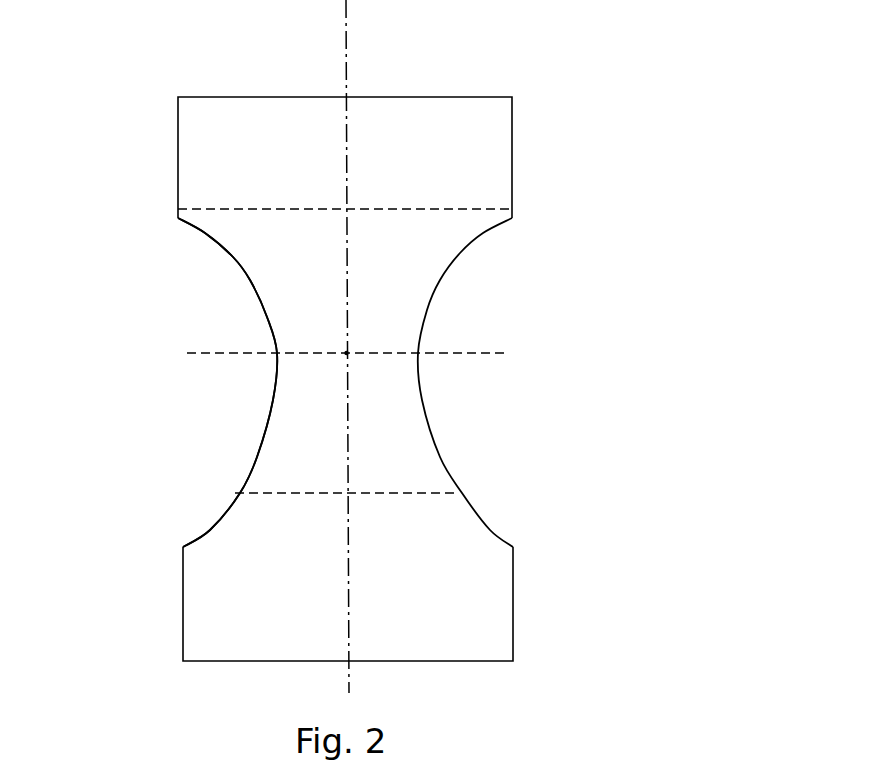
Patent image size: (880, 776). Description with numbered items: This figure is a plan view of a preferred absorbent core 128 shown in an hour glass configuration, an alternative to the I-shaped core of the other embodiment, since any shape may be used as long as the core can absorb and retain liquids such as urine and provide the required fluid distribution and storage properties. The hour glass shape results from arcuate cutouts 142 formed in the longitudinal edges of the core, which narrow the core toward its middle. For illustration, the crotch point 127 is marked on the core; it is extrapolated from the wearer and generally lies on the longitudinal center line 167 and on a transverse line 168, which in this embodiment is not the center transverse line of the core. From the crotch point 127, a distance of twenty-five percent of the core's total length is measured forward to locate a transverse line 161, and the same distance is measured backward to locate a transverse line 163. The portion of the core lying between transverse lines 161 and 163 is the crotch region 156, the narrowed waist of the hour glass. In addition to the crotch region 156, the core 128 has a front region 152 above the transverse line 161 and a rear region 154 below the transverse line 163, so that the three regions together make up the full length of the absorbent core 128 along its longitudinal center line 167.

The absorbent core 128 is at (533, 116).
The front region 152 is at (208, 150).
The rear region 154 is at (213, 598).
The crotch region 156 is at (275, 452).
The arcuate cutouts 142 is at (250, 411).
The transverse line 161 is at (405, 210).
The transverse line 163 is at (401, 493).
The transverse line 168 is at (452, 352).
The crotch point 127 is at (345, 352).
The longitudinal center line 167 is at (347, 35).